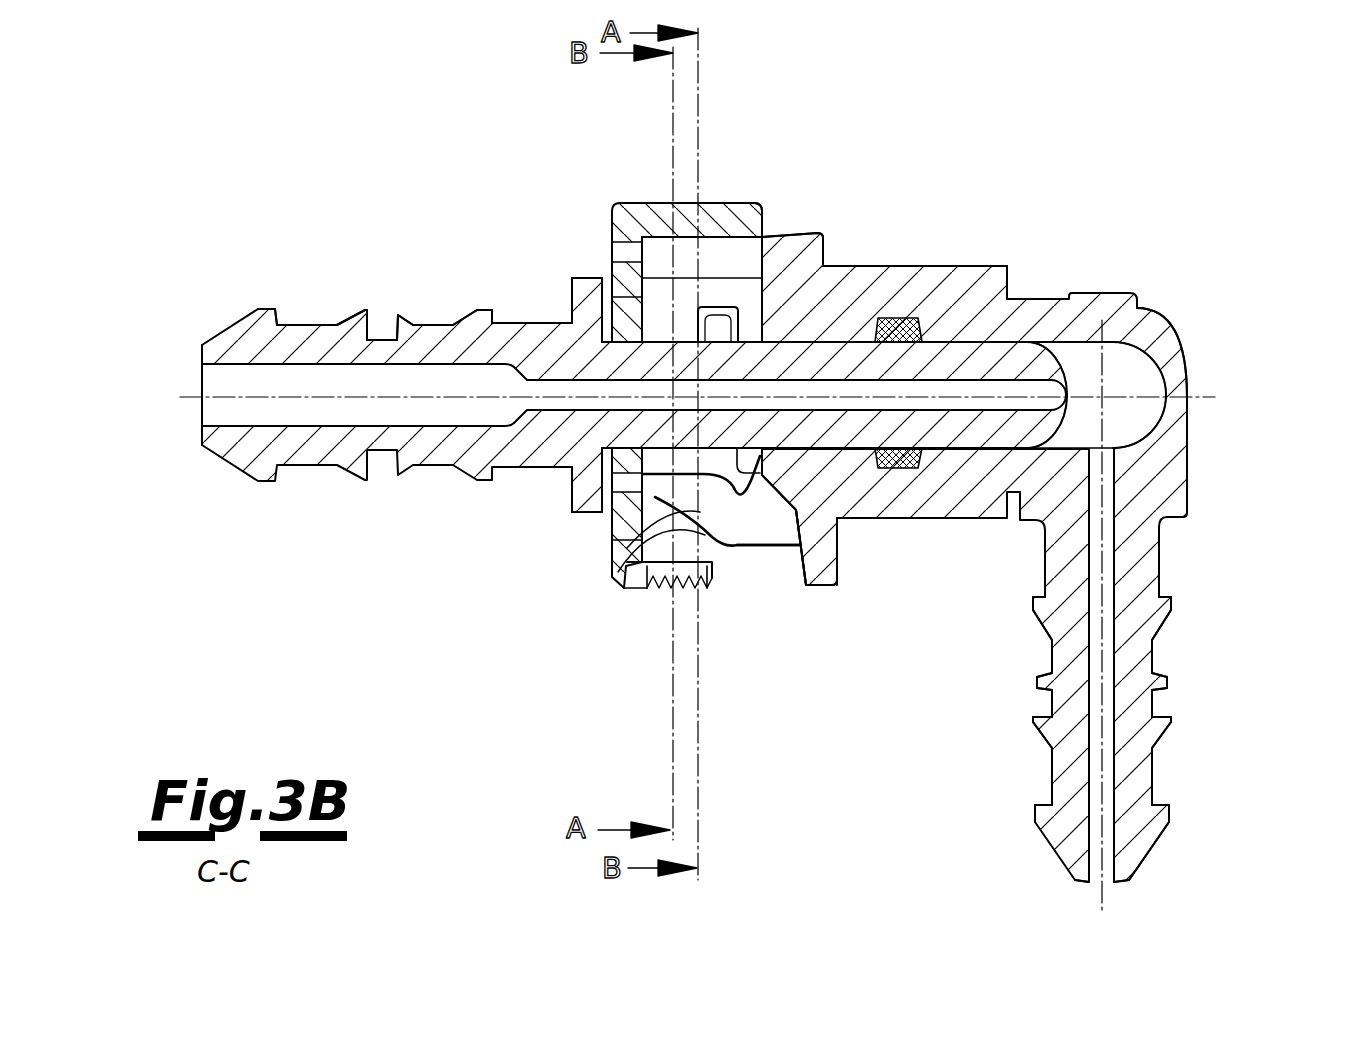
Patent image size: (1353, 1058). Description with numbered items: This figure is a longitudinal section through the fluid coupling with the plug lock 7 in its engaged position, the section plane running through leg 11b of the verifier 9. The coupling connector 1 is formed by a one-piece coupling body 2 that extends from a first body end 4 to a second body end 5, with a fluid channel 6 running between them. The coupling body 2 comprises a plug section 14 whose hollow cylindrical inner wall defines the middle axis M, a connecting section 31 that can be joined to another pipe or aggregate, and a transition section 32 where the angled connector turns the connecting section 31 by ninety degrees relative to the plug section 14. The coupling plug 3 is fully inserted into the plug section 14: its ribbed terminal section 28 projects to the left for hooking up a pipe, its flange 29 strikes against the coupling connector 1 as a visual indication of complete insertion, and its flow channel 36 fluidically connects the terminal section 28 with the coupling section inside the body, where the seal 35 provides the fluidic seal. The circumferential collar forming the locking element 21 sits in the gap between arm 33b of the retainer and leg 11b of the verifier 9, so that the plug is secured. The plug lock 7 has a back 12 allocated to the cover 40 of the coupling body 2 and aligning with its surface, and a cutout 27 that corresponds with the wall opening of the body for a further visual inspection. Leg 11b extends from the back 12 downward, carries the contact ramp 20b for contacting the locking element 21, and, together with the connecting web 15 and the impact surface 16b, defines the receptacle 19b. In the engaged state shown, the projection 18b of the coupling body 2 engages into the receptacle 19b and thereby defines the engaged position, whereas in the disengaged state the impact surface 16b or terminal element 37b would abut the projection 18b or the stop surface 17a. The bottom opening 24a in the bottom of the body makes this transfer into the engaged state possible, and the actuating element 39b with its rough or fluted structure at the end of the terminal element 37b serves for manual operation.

The coupling connector 1 is at (1062, 167).
The coupling body 2 is at (1067, 277).
The coupling plug 3 is at (242, 478).
The first body end 4 is at (608, 205).
The second body end 5 is at (1083, 888).
The fluid channel 6 is at (1141, 392).
The plug lock 7 is at (740, 193).
The verifier 9 is at (757, 323).
The leg 11b is at (760, 482).
The back 12 is at (715, 210).
The plug section 14 is at (972, 258).
The connecting web 15 is at (655, 515).
The impact surface 16b is at (663, 590).
The stop surface 17a is at (740, 500).
The projection 18b is at (660, 530).
The receptacle 19b is at (705, 560).
The contact ramp 20b is at (613, 507).
The locking element 21 is at (723, 306).
The bottom opening 24a is at (782, 556).
The cutout 27 is at (650, 245).
The terminal section 28 is at (341, 300).
The flange 29 is at (570, 481).
The connecting section 31 is at (1177, 672).
The transition section 32 is at (1200, 365).
The arm 33b is at (660, 310).
The seal 35 is at (897, 323).
The flow channel 36 is at (212, 412).
The terminal element 37b is at (653, 583).
The actuating element 39b is at (690, 595).
The cover 40 is at (806, 232).
The middle axis M is at (1203, 397).